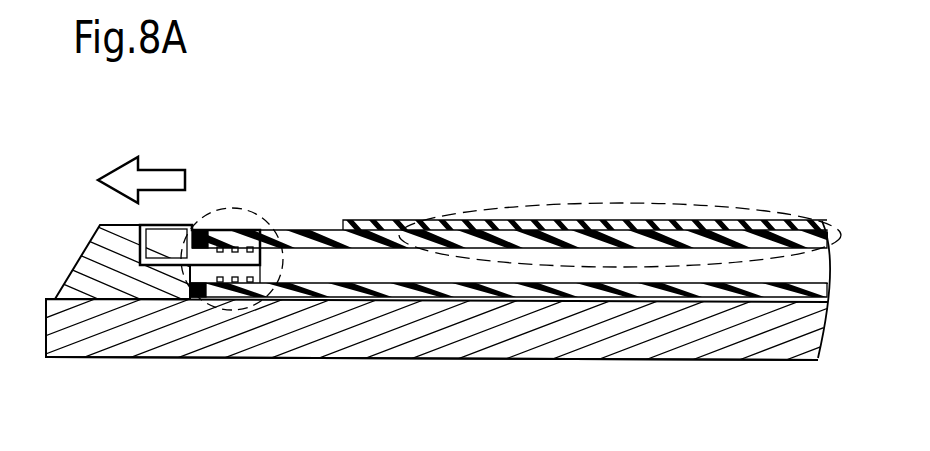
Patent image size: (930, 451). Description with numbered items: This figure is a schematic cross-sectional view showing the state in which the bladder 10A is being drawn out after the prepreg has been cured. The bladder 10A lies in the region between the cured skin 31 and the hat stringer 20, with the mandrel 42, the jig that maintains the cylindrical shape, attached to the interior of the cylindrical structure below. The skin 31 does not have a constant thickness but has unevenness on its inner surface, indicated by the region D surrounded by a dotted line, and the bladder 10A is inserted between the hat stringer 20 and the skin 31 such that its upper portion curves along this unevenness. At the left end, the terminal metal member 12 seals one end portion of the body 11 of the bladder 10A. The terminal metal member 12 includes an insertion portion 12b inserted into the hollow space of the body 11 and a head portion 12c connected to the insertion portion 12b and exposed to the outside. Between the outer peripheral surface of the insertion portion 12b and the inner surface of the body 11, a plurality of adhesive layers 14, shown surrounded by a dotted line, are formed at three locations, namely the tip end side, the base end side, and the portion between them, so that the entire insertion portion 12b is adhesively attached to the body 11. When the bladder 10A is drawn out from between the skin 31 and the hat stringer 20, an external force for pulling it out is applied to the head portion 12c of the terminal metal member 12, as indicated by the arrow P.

The bladder 10A is at (422, 196).
The body 11 is at (308, 230).
The terminal metal member 12 is at (76, 252).
The insertion portion 12b is at (209, 290).
The head portion 12c is at (97, 290).
The adhesive layers 14 is at (226, 208).
The hat stringer 20 is at (490, 302).
The skin 31 is at (360, 220).
The mandrel 42 is at (295, 348).
The region D is at (615, 200).
The arrow P is at (141, 167).